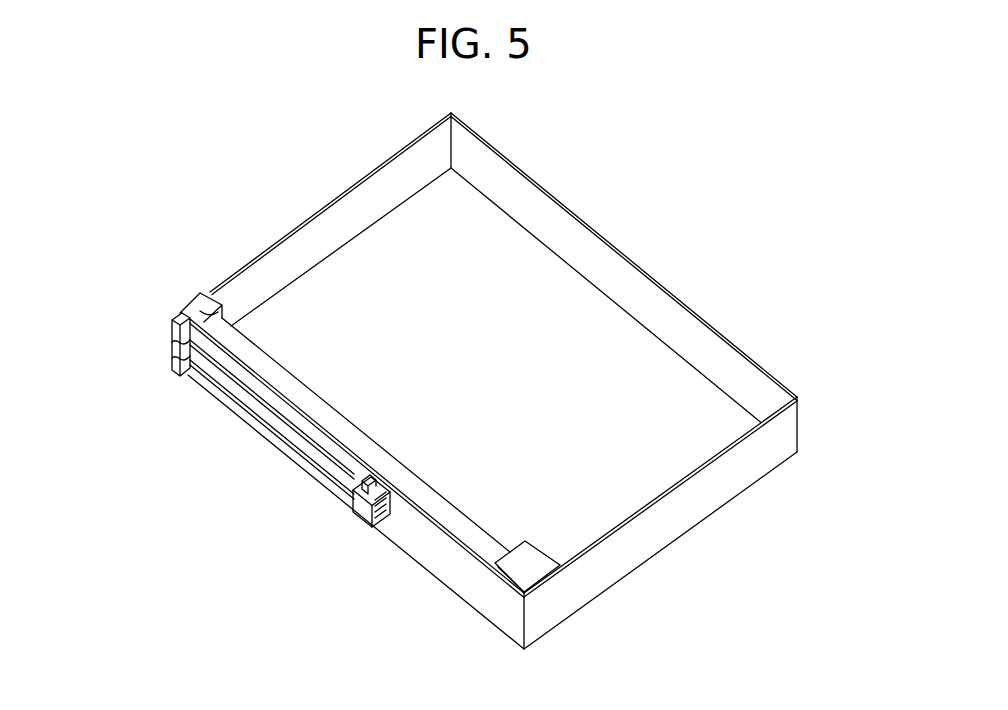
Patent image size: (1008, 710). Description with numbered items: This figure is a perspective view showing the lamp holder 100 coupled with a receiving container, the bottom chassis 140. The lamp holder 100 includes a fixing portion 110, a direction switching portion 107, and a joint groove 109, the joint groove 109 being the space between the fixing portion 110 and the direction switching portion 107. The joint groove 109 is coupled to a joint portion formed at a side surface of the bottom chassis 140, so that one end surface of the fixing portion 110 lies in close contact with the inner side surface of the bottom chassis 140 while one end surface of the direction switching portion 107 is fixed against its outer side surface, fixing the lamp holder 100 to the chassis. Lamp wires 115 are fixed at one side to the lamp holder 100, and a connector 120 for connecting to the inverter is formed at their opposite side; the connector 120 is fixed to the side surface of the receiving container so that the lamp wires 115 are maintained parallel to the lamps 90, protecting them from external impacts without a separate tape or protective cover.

The lamps 90 is at (473, 540).
The lamp holder 100 is at (85, 291).
The direction switching portion 107 is at (172, 348).
The joint groove 109 is at (172, 321).
The fixing portion 110 is at (198, 302).
The lamp wires 115 is at (266, 428).
The connector 120 is at (353, 511).
The bottom chassis 140 is at (663, 546).